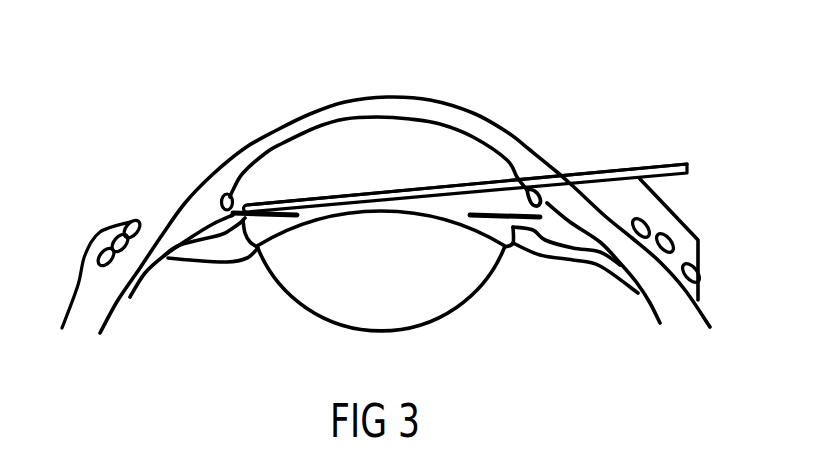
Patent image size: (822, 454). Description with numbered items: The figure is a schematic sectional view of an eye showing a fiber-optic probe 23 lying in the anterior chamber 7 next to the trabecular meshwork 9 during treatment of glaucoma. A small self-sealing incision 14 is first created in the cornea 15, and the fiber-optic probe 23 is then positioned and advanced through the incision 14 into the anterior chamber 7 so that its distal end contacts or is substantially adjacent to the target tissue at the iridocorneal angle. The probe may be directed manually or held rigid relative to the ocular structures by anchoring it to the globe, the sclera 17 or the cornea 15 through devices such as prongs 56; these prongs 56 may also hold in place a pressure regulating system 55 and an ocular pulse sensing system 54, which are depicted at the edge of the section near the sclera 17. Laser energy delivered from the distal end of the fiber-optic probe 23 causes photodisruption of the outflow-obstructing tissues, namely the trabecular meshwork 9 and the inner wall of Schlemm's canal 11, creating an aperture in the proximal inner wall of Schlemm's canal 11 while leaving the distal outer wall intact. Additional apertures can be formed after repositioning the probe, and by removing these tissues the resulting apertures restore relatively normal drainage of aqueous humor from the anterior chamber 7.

The anterior chamber 7 is at (330, 182).
The cornea 15 is at (230, 172).
The Schlemm's canal 11 is at (220, 200).
The trabecular meshwork 9 is at (222, 213).
The sclera 17 is at (78, 320).
The incision 14 is at (537, 178).
The fiber-optic probe 23 is at (458, 188).
The ocular pulse sensing system 54 is at (650, 220).
The pressure regulating system 55 is at (693, 238).
The prongs 56 is at (699, 273).